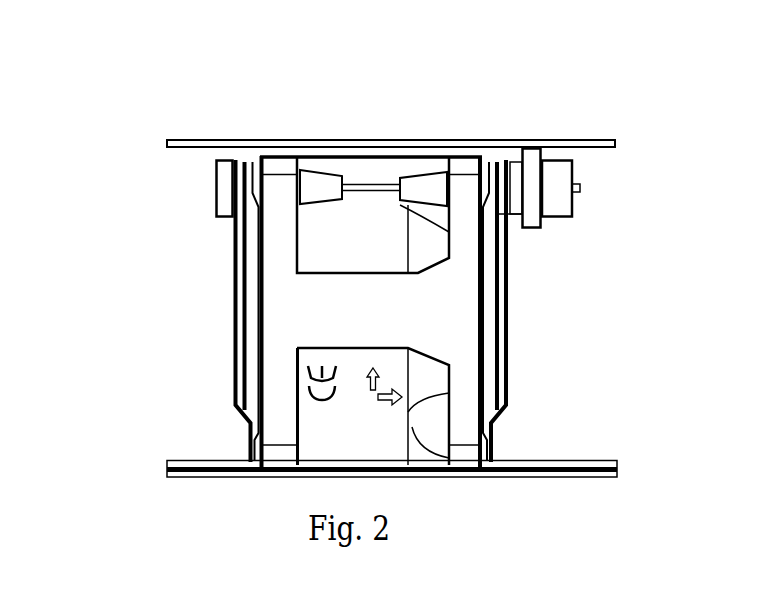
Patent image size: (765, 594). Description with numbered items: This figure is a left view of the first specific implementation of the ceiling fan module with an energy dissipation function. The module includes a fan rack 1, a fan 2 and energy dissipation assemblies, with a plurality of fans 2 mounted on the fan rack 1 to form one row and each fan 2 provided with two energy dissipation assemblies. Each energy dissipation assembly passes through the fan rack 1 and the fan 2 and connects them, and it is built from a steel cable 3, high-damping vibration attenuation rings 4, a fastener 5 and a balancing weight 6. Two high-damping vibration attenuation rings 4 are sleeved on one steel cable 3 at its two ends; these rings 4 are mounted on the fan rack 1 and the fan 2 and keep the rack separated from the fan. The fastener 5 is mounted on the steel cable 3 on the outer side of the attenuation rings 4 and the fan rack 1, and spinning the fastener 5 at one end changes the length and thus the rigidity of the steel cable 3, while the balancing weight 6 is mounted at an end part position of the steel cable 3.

The fan rack 1 is at (235, 257).
The fan 2 is at (272, 198).
The steel cable 3 is at (371, 185).
The high-damping vibration attenuation ring 4 is at (428, 185).
The fastener 5 is at (512, 182).
The balancing weight 6 is at (555, 183).